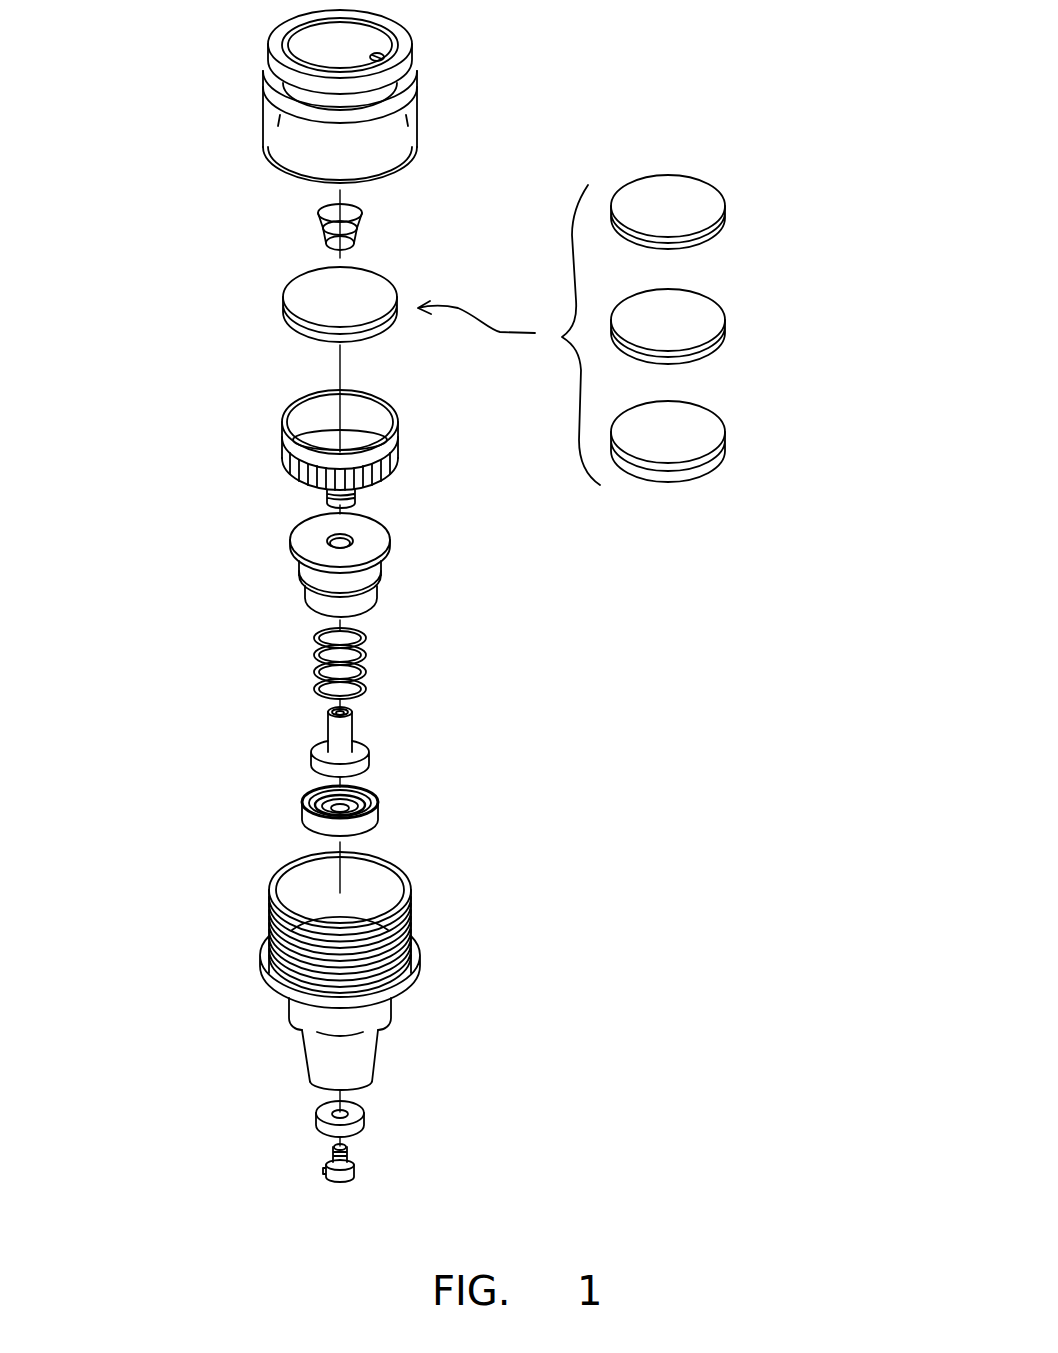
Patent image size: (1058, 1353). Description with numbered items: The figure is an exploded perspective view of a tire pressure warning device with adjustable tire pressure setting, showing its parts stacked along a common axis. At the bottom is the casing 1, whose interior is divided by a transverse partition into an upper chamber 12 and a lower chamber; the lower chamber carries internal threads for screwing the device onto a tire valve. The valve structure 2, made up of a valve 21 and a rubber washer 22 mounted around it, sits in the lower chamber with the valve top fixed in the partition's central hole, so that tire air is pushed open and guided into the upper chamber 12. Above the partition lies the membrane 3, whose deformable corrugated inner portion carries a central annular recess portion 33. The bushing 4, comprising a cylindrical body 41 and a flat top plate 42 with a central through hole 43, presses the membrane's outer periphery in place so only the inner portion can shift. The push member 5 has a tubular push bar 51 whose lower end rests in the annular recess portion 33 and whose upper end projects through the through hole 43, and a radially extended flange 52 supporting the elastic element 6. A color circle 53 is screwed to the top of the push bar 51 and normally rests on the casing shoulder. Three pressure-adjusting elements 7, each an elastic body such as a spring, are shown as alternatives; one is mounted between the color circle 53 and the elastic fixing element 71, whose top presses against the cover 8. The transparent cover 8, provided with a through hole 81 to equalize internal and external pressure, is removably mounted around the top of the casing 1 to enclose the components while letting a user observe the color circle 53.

The casing 1 is at (378, 970).
The upper chamber 12 is at (377, 890).
The valve structure 2 is at (348, 1144).
The valve 21 is at (326, 1166).
The rubber washer 22 is at (315, 1117).
The membrane 3 is at (321, 809).
The annular recess portion 33 is at (306, 790).
The bushing 4 is at (344, 567).
The cylindrical body 41 is at (308, 582).
The flat top plate 42 is at (297, 548).
The central through hole 43 is at (328, 536).
The push member 5 is at (350, 742).
The push bar 51 is at (329, 719).
The radially extended flange 52 is at (365, 751).
The color circle 53 is at (297, 461).
The elastic element 6 is at (380, 659).
The pressure-adjusting element 7 is at (257, 319).
The elastic fixing element 71 is at (362, 228).
The cover 8 is at (385, 94).
The through hole 81 is at (382, 55).